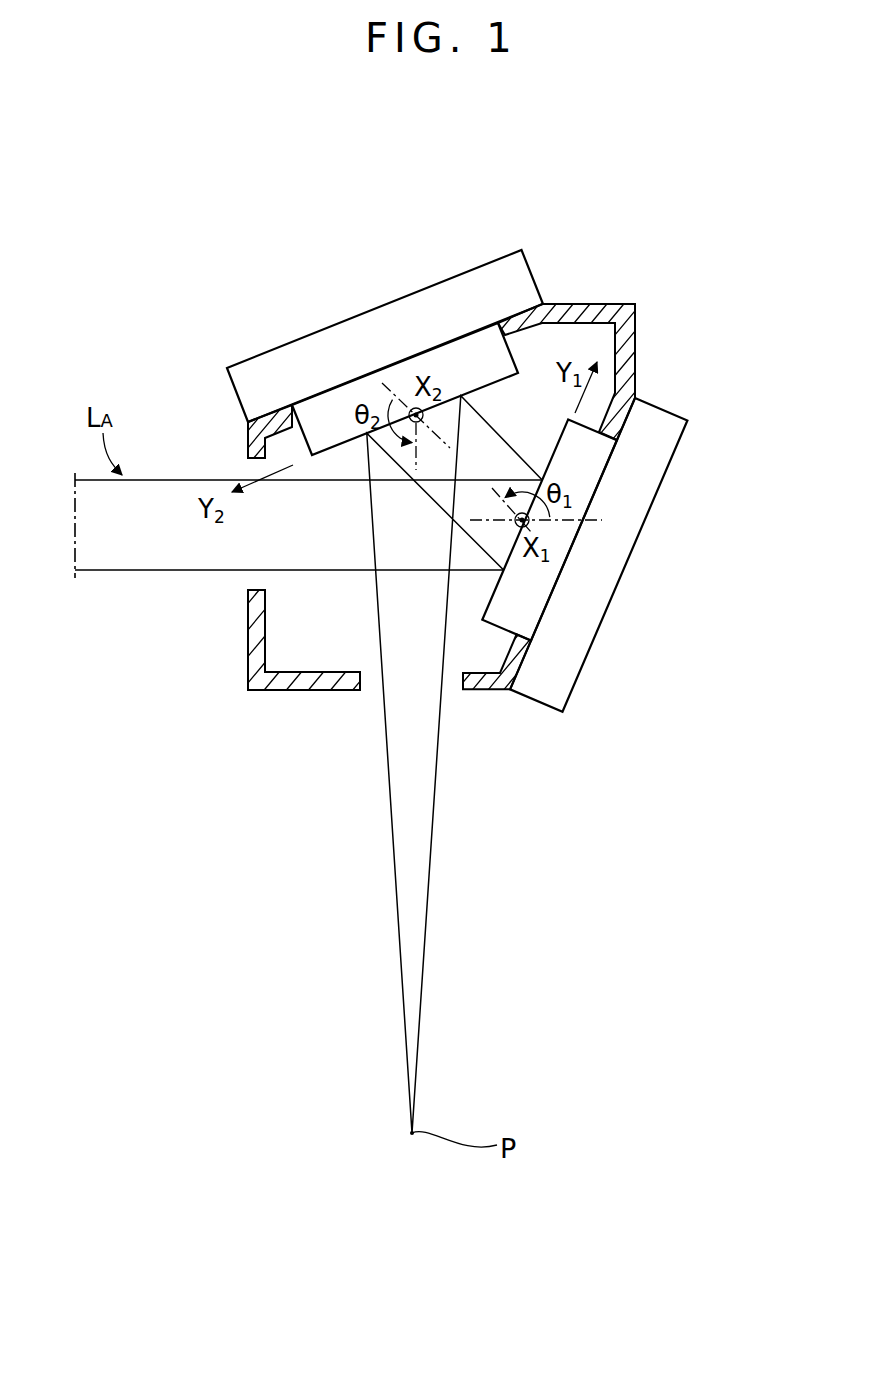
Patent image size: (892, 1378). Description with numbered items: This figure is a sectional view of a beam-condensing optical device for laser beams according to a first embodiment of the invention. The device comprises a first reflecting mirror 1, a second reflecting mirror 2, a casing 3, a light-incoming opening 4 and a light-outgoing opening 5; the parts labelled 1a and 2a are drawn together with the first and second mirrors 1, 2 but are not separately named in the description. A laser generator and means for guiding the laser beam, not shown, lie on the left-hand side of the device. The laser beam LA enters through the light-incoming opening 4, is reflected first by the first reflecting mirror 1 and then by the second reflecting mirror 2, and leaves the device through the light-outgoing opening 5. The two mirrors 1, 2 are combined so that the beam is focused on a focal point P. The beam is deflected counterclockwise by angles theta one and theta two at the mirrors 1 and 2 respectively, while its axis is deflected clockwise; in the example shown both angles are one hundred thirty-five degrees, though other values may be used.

The first reflecting mirror 1 is at (588, 458).
The first mirror drive (galvanometer) 1a is at (578, 620).
The second reflecting mirror 2 is at (327, 417).
The second mirror drive (galvanometer) 2a is at (458, 305).
The casing 3 is at (597, 300).
The light-incoming opening 4 is at (253, 580).
The light-outgoing opening 5 is at (372, 680).